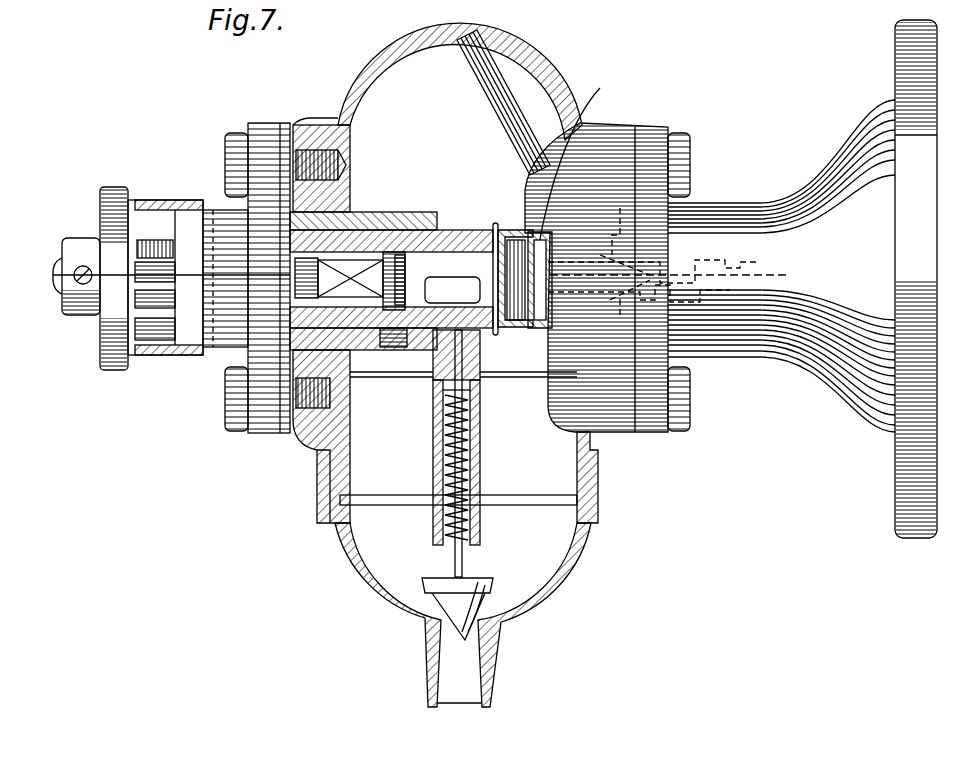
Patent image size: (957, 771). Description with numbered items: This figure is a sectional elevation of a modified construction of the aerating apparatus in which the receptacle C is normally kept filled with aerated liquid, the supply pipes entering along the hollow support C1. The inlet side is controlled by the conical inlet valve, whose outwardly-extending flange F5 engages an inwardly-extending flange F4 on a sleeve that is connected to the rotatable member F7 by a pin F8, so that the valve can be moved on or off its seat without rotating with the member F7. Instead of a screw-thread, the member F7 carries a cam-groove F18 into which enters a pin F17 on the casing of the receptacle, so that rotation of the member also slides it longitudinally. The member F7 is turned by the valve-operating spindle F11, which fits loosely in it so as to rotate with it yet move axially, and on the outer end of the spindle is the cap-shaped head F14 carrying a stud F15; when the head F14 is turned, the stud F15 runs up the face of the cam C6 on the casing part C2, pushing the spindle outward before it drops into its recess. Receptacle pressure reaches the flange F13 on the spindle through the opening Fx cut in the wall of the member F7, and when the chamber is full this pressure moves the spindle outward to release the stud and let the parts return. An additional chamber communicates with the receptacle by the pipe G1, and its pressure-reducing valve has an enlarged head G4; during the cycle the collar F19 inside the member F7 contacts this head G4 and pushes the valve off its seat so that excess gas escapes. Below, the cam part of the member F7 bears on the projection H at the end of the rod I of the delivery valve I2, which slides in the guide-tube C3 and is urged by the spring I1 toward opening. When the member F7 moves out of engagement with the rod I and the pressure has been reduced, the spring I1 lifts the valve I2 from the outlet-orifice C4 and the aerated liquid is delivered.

The receptacle C is at (556, 72).
The hollow support C1 is at (790, 245).
The casing part C2 is at (345, 214).
The guide-tube C3 is at (482, 450).
The outlet-orifice C4 is at (484, 658).
The cam C6 is at (155, 245).
The inwardly-extending flange F4 is at (570, 205).
The outwardly-extending flange F5 is at (583, 169).
The rotatable member F7 is at (448, 248).
The pin F8 is at (540, 252).
The valve-operating spindle F11 is at (162, 300).
The flange F13 is at (394, 254).
The cap-shaped head F14 is at (112, 230).
The stud F15 is at (172, 250).
The pin F17 is at (392, 348).
The cam-groove F18 is at (405, 280).
The collar F19 is at (500, 240).
The opening Fx is at (452, 290).
The pipe G1 is at (495, 98).
The enlarged head G4 is at (560, 262).
The projection H is at (440, 380).
The rod I is at (463, 560).
The spring I1 is at (443, 448).
The delivery-valve I2 is at (448, 596).